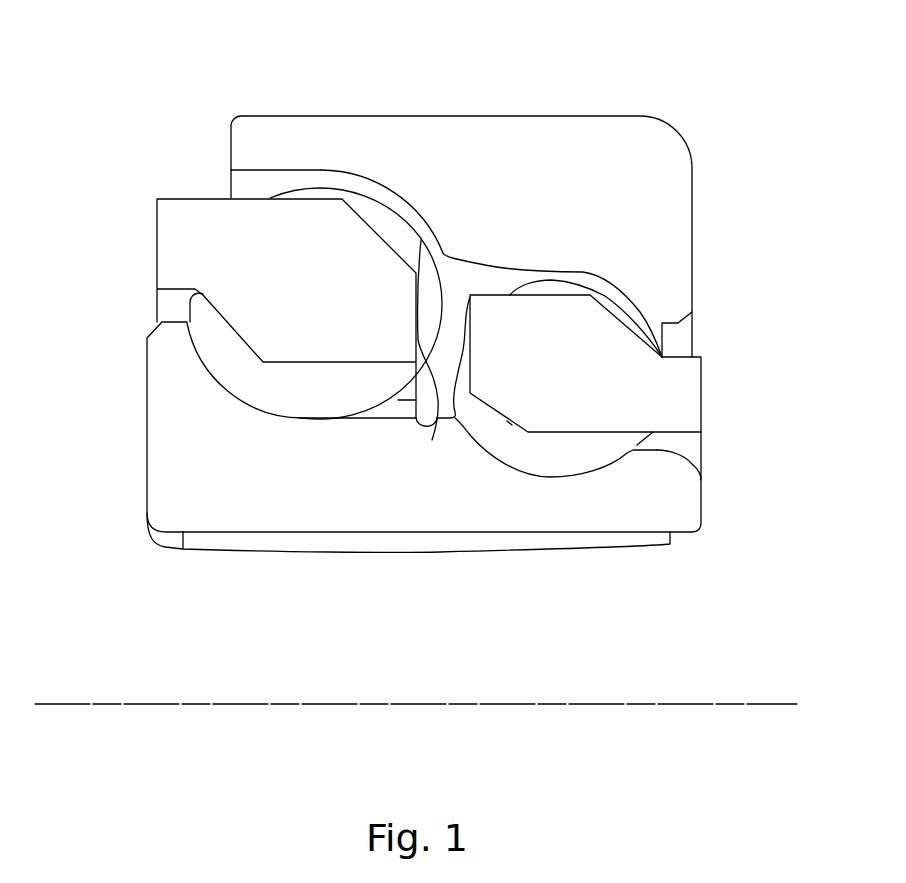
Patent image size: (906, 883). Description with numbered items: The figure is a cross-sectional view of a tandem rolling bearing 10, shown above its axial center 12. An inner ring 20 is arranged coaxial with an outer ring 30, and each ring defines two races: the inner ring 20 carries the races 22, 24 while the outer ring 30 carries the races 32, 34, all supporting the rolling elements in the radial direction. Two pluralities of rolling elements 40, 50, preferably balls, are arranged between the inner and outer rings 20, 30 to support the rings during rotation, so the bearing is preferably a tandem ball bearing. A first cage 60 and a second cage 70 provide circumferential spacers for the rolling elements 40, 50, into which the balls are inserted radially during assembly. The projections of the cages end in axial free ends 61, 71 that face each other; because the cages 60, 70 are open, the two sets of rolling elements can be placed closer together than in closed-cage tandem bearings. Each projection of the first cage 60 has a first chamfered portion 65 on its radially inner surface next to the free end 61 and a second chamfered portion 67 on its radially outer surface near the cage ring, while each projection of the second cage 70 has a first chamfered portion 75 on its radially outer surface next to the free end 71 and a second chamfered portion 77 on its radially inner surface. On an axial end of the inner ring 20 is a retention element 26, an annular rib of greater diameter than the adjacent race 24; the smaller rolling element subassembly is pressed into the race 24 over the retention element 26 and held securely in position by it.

The tandem rolling bearing 10 is at (242, 98).
The axial center 12 is at (706, 703).
The inner ring 20 is at (384, 466).
The race 22 is at (337, 420).
The race 24 is at (543, 477).
The retention element 26 is at (688, 455).
The outer ring 30 is at (471, 194).
The race 32 is at (384, 186).
The race 34 is at (583, 272).
The rolling elements 40 is at (617, 313).
The rolling elements 50 is at (268, 198).
The first cage 60 is at (697, 352).
The axial free end 61 is at (402, 337).
The first chamfered portion 65 is at (510, 420).
The second chamfered portion 67 is at (615, 305).
The second cage 70 is at (253, 262).
The axial free end 71 is at (435, 423).
The first chamfered portion 75 is at (393, 212).
The second chamfered portion 77 is at (204, 320).